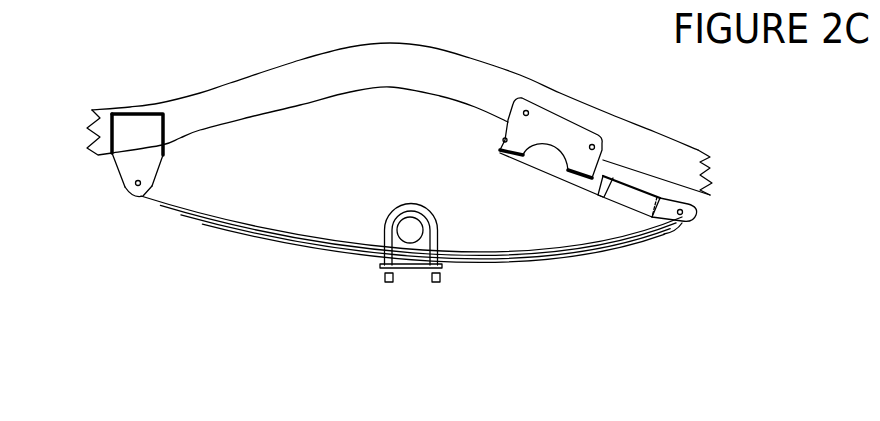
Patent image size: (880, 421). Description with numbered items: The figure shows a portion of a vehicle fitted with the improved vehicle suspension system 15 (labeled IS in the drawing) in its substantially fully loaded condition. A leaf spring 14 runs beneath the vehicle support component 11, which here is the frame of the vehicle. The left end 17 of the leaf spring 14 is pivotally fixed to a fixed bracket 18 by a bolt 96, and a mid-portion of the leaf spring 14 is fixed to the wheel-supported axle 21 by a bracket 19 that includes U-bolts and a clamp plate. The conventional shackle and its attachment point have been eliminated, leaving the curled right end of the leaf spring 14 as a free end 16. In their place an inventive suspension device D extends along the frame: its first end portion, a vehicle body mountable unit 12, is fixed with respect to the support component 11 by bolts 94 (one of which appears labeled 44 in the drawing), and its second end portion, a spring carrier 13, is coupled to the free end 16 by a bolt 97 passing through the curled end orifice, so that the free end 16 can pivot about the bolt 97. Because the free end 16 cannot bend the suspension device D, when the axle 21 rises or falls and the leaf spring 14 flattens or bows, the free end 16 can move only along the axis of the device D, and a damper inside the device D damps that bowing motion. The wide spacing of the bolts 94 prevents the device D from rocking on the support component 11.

The vehicle support component 11 is at (293, 78).
The vehicle body mountable unit 12 is at (592, 200).
The spring carrier 13 is at (700, 230).
The leaf spring 14 is at (313, 257).
The improved vehicle suspension system 15 is at (443, 35).
The free end 16 is at (677, 237).
The left end 17 is at (133, 197).
The bracket 18 is at (130, 158).
The bracket 19 is at (381, 230).
The axle 21 is at (415, 205).
The fastener 44 is at (595, 146).
The bolts 94 is at (527, 113).
The bolt 96 is at (141, 183).
The bolt 97 is at (686, 211).
The suspension device D is at (596, 122).